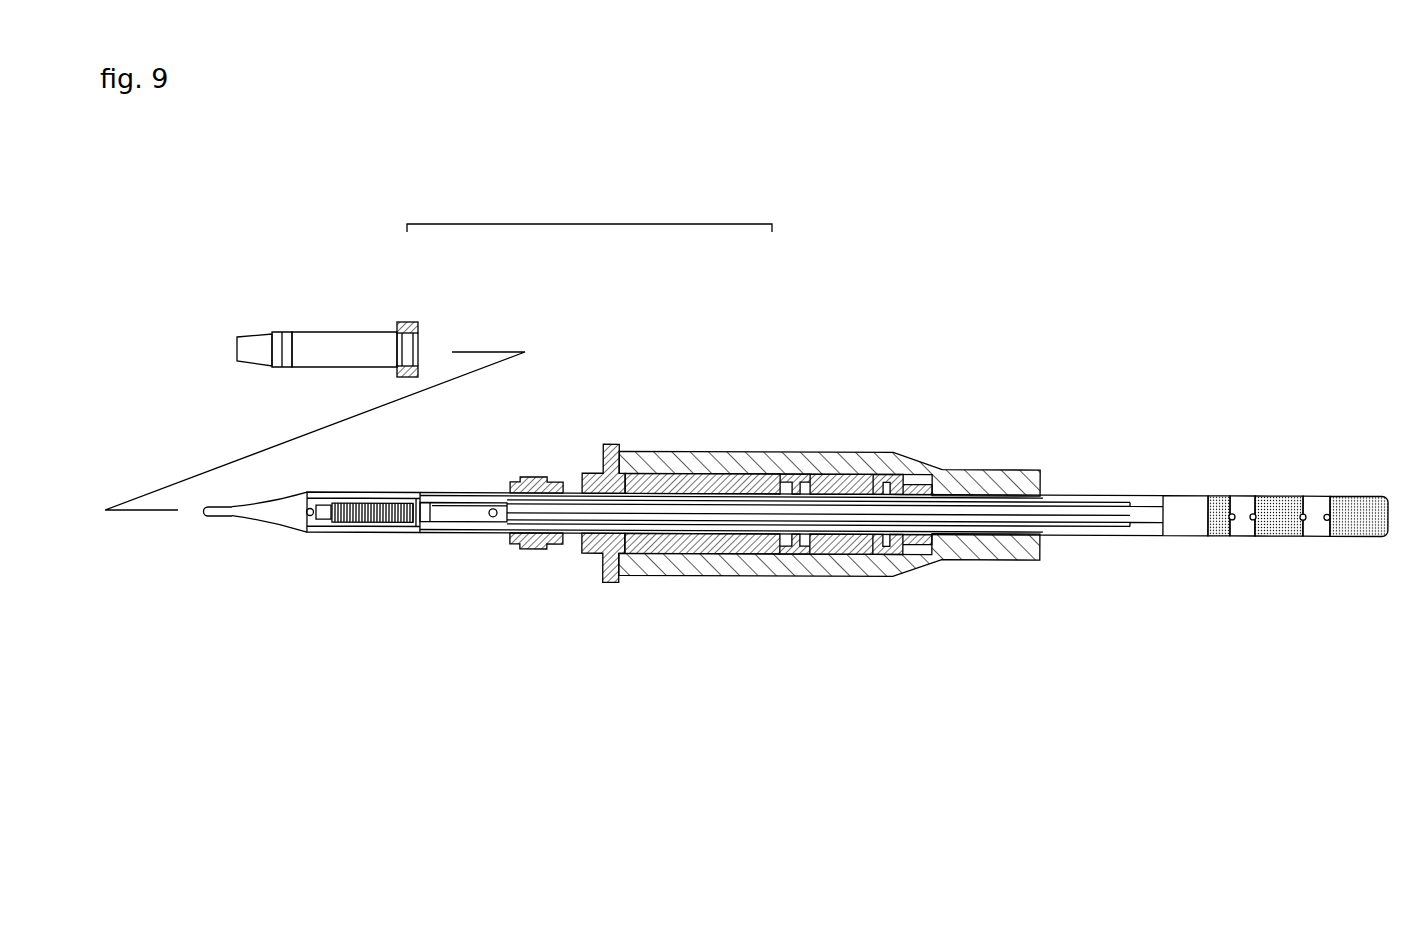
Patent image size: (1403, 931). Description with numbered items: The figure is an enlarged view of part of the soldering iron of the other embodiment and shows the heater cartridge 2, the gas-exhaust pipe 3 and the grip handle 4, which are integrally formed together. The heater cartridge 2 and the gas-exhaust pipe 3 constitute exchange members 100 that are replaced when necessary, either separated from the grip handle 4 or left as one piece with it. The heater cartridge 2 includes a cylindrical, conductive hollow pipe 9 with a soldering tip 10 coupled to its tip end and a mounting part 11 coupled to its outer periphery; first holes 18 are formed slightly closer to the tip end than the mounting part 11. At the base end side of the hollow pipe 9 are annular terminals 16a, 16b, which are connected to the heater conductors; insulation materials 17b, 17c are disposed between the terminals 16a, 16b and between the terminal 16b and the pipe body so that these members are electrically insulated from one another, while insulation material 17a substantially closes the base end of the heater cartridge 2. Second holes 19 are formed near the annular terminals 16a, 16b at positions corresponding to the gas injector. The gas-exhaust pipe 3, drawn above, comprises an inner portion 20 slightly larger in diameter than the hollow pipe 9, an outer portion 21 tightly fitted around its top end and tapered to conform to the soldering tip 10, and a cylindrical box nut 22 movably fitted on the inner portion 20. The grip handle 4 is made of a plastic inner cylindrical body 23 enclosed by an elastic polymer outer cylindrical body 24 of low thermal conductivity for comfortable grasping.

The exchange members 100 is at (589, 207).
The gas-exhaust pipe 3 is at (313, 401).
The inner portion 20 is at (338, 332).
The outer portion 21 is at (281, 331).
The box nut 22 is at (411, 321).
The soldering tip 10 is at (220, 516).
The hollow pipe 9 is at (453, 562).
The first holes 18 is at (484, 490).
The mounting part 11 is at (546, 478).
The inner cylindrical body 23 is at (607, 442).
The grip handle 4 is at (735, 431).
The outer cylindrical body 24 is at (842, 468).
The heater cartridge 2 is at (1094, 460).
The insulation material 17a is at (1357, 540).
The insulation material 17b is at (1282, 540).
The insulation material 17c is at (1212, 540).
The annular terminal 16a is at (1314, 505).
The annular terminal 16b is at (1240, 505).
The second holes 19 is at (1252, 522).